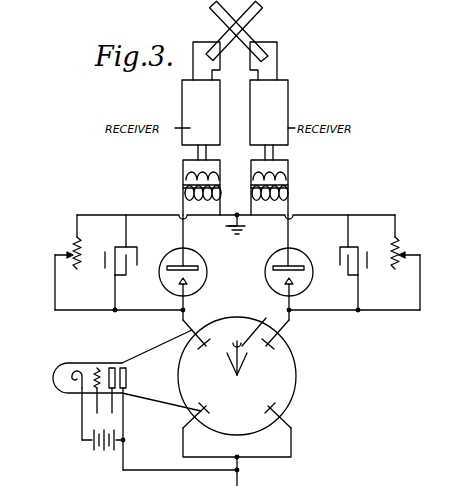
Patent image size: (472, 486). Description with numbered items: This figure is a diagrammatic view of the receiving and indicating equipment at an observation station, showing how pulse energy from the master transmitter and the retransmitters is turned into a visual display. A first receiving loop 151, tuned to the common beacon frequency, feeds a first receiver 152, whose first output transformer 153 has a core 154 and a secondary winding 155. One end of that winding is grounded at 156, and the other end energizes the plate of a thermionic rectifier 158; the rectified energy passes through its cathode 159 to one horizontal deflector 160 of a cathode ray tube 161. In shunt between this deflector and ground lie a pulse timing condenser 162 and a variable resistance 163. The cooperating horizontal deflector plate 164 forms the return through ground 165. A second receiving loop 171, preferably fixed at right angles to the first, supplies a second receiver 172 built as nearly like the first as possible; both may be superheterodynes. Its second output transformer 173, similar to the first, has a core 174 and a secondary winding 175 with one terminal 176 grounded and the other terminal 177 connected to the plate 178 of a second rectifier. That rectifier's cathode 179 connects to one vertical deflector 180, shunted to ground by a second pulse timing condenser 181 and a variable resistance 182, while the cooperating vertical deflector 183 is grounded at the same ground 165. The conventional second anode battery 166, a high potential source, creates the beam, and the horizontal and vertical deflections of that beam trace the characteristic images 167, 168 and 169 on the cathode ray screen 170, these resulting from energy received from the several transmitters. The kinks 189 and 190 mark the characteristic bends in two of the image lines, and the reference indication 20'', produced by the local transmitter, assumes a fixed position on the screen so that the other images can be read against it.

The first receiving loop 151 is at (211, 10).
The second receiving loop 171 is at (262, 10).
The first receiver 152 is at (201, 112).
The second receiver 172 is at (269, 112).
The first output transformer 153 is at (192, 172).
The core 154 is at (183, 186).
The secondary winding 155 is at (186, 201).
The second output transformer 173 is at (282, 172).
The core 174 is at (288, 186).
The secondary winding 175 is at (286, 201).
The ground 156 is at (233, 230).
The terminal 176 is at (243, 230).
The terminal 177 is at (290, 229).
The rectifier 158 is at (175, 257).
The cathode 159 is at (180, 283).
The plate 178 is at (300, 259).
The cathode 179 is at (293, 283).
The variable resistance 163 is at (74, 248).
The variable resistance 182 is at (398, 245).
The pulse timing condenser 162 is at (105, 269).
The second pulse timing condenser 181 is at (368, 269).
The cathode ray screen 170 is at (297, 380).
The horizontal deflector 160 is at (185, 330).
The vertical deflector 180 is at (288, 339).
The vertical deflector 183 is at (211, 410).
The horizontal deflector plate 164 is at (283, 409).
The image 168 is at (237, 353).
The reference indication 20'' is at (261, 325).
The image 167 is at (217, 373).
The image 169 is at (254, 373).
The kink 189 is at (226, 358).
The kink 190 is at (248, 358).
The ground 165 is at (242, 473).
The cathode ray tube 161 is at (160, 401).
The second anode battery 166 is at (96, 448).